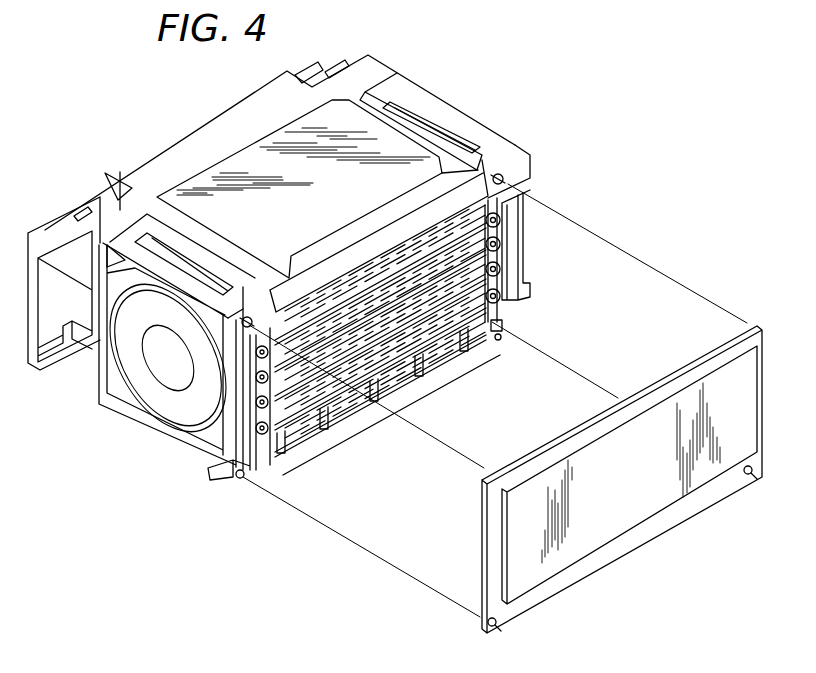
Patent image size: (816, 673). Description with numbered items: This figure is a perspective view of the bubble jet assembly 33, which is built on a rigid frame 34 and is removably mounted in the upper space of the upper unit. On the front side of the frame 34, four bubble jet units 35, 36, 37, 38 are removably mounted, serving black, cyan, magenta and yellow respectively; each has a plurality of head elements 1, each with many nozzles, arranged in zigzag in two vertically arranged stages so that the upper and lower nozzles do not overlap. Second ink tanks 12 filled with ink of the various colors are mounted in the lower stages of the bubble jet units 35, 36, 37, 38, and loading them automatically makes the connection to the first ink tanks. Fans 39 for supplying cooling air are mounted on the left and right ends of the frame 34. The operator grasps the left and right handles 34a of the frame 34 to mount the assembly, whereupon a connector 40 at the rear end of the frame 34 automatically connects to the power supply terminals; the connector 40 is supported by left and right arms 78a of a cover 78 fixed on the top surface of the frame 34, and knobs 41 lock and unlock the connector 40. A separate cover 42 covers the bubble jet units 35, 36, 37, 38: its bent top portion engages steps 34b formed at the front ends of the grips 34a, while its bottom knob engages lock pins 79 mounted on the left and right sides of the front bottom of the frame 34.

The bubble jet assembly 33 is at (157, 104).
The cover 78 is at (222, 125).
The arms of the cover 78a is at (118, 180).
The connector 40 is at (75, 210).
The frame 34 is at (489, 130).
The handles 34a is at (177, 265).
The steps 34b is at (200, 425).
The knobs 41 is at (248, 318).
The head elements 1 is at (350, 305).
The second ink tanks 12 is at (404, 372).
The bubble jet unit 35 is at (497, 228).
The bubble jet unit 36 is at (495, 250).
The bubble jet unit 37 is at (492, 282).
The bubble jet unit 38 is at (498, 318).
The lock pins 79 is at (500, 340).
The fans 39 is at (166, 418).
The cover 42 is at (762, 355).